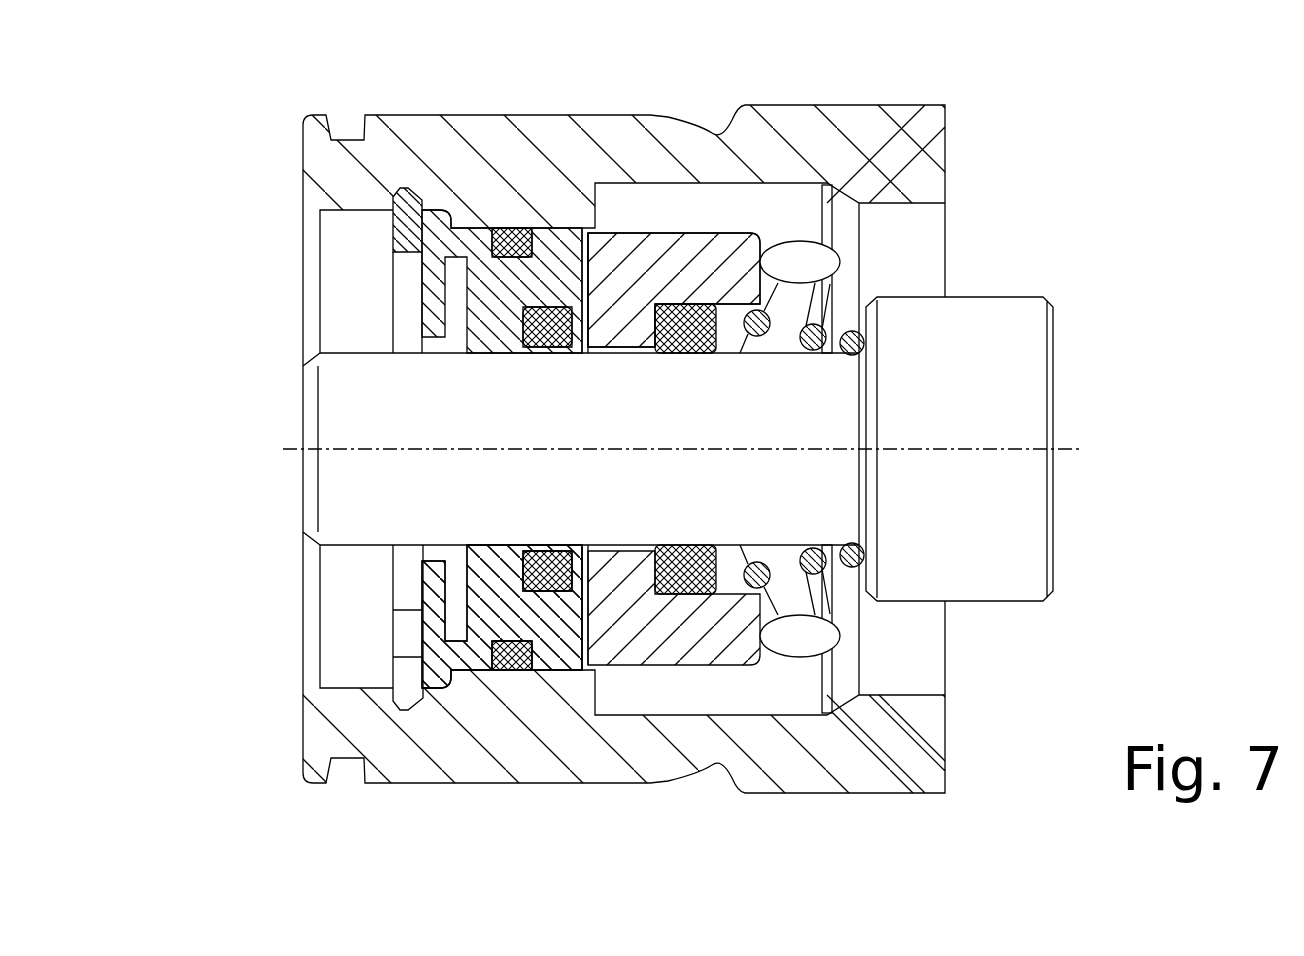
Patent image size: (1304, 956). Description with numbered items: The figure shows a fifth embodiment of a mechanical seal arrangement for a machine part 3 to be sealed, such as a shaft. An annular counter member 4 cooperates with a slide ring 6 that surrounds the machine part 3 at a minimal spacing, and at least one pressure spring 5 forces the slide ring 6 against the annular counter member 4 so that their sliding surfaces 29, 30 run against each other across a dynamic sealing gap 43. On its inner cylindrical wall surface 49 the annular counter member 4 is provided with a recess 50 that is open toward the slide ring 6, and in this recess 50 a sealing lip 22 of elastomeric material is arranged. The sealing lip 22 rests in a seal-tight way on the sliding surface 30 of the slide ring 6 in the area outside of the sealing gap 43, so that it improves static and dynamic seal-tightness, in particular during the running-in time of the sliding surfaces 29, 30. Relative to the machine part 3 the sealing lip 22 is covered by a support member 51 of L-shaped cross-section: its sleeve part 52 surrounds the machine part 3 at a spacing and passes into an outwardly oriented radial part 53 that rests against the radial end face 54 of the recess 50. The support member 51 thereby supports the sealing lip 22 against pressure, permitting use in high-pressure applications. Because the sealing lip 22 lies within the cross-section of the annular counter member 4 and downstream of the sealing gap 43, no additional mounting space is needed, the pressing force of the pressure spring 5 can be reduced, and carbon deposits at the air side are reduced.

The machine part 3 is at (347, 400).
The annular counter member 4 is at (500, 305).
The pressure spring 5 is at (828, 327).
The slide ring 6 is at (652, 272).
The sealing lip 22 is at (586, 350).
The sliding surface 29 is at (565, 640).
The sliding surface 30 is at (657, 307).
The sealing gap 43 is at (607, 253).
The inner cylindrical wall surface 49 is at (493, 540).
The recess 50 is at (520, 565).
The support member 51 is at (578, 546).
The sleeve part 52 is at (562, 352).
The radial part 53 is at (460, 595).
The radial end face 54 is at (525, 337).